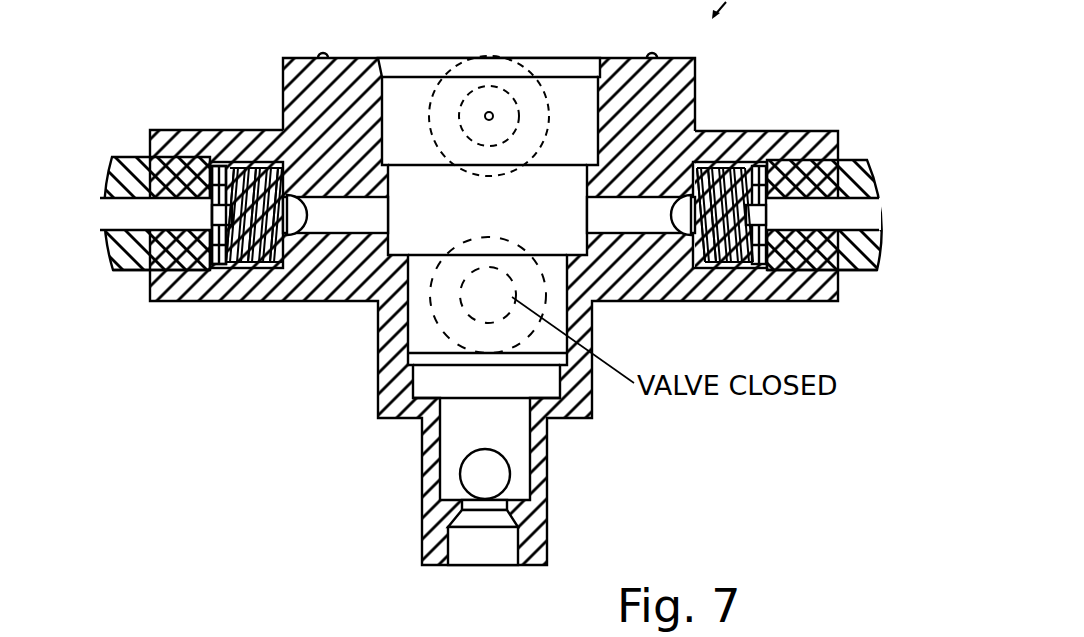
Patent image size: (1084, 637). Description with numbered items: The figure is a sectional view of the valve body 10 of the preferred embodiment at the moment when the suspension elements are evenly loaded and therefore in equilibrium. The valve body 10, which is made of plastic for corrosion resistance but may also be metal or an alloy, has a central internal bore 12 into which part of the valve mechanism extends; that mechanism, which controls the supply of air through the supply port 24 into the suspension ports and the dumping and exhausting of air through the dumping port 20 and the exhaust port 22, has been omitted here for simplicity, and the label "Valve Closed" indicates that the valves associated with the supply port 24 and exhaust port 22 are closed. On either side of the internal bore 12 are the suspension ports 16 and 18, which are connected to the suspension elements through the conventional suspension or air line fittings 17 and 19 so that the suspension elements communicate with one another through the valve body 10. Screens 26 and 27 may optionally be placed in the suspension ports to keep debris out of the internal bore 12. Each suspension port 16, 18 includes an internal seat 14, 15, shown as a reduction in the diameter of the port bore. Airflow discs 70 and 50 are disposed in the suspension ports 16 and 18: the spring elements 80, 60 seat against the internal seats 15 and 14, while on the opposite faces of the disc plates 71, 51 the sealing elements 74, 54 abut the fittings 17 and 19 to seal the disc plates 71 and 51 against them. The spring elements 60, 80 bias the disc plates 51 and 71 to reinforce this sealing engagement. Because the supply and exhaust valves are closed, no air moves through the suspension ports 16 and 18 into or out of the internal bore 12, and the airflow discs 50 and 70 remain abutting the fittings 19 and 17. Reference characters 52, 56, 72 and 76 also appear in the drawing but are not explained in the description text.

The valve body 10 is at (745, 634).
The internal bore 12 is at (378, 365).
The internal seat 14 is at (685, 270).
The internal seat 15 is at (292, 267).
The suspension port 16 is at (163, 129).
The fitting 17 is at (96, 167).
The suspension port 18 is at (713, 131).
The fitting 19 is at (882, 172).
The dumping port 20 is at (494, 182).
The exhaust port 22 is at (485, 449).
The supply port 24 is at (509, 219).
The screen 26 is at (308, 220).
The screen 27 is at (668, 217).
The airflow disc 50 is at (759, 175).
The disc plate 51 is at (793, 258).
The second retainer 52 is at (770, 220).
The sealing element 54 is at (767, 165).
The second spring seat 56 is at (748, 268).
The spring element 60 is at (710, 268).
The airflow disc 70 is at (222, 172).
The disc plate 71 is at (243, 170).
The first retainer 72 is at (212, 215).
The sealing element 74 is at (183, 266).
The first retainer flange 76 is at (213, 268).
The spring element 80 is at (255, 262).